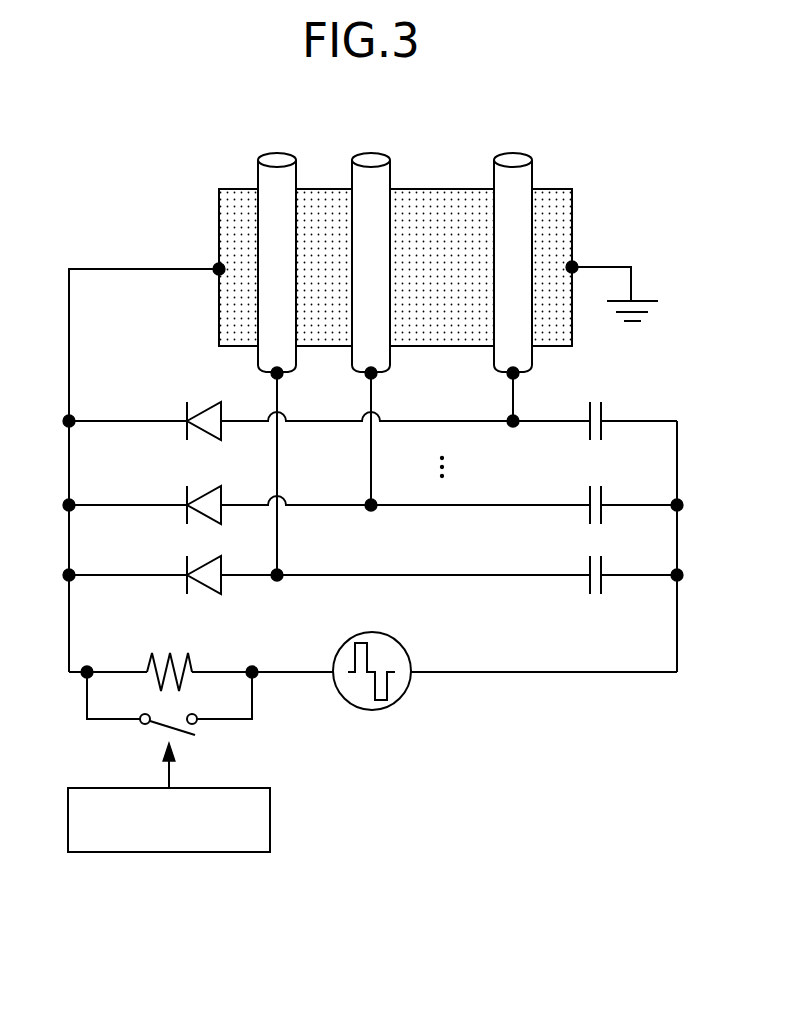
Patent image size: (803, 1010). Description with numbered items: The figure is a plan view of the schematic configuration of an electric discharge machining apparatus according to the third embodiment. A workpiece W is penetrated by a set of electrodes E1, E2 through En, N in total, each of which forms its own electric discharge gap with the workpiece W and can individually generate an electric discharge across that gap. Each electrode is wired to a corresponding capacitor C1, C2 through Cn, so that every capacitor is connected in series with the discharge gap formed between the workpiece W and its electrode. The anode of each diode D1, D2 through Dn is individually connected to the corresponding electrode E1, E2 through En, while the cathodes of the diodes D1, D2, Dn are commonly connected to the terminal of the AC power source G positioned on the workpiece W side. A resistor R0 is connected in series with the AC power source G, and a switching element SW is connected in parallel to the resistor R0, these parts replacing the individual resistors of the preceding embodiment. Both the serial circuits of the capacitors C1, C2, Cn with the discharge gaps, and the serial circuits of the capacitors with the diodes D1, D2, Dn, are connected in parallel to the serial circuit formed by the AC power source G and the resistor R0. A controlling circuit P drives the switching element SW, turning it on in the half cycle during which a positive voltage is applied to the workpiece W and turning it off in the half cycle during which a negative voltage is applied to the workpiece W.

The workpiece W is at (219, 207).
The electrode E1 is at (278, 153).
The electrode E2 is at (372, 153).
The electrode En is at (514, 153).
The diode Dn is at (221, 403).
The diode D2 is at (221, 488).
The diode D1 is at (221, 558).
The capacitor Cn is at (603, 404).
The capacitor C2 is at (603, 490).
The capacitor C1 is at (605, 560).
The resistor R0 is at (191, 660).
The AC power source G is at (398, 641).
The switching element SW is at (138, 727).
The controlling circuit P is at (214, 788).